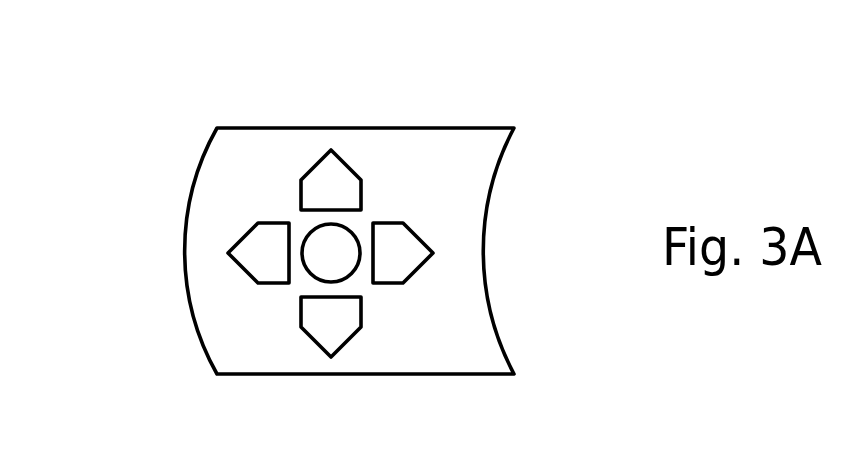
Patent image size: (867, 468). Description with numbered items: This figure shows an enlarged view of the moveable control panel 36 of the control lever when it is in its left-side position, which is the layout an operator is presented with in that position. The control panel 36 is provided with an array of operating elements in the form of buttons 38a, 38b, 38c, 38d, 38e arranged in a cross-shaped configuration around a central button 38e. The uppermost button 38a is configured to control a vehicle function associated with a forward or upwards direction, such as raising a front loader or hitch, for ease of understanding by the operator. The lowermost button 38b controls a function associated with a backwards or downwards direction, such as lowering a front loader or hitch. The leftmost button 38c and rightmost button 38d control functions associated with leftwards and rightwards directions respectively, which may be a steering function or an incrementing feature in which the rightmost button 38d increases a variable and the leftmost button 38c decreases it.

The control panel 36 is at (233, 333).
The uppermost button 38a is at (301, 183).
The lowermost button 38b is at (361, 327).
The leftmost button 38c is at (258, 285).
The rightmost button 38d is at (403, 223).
The button 38e is at (352, 233).